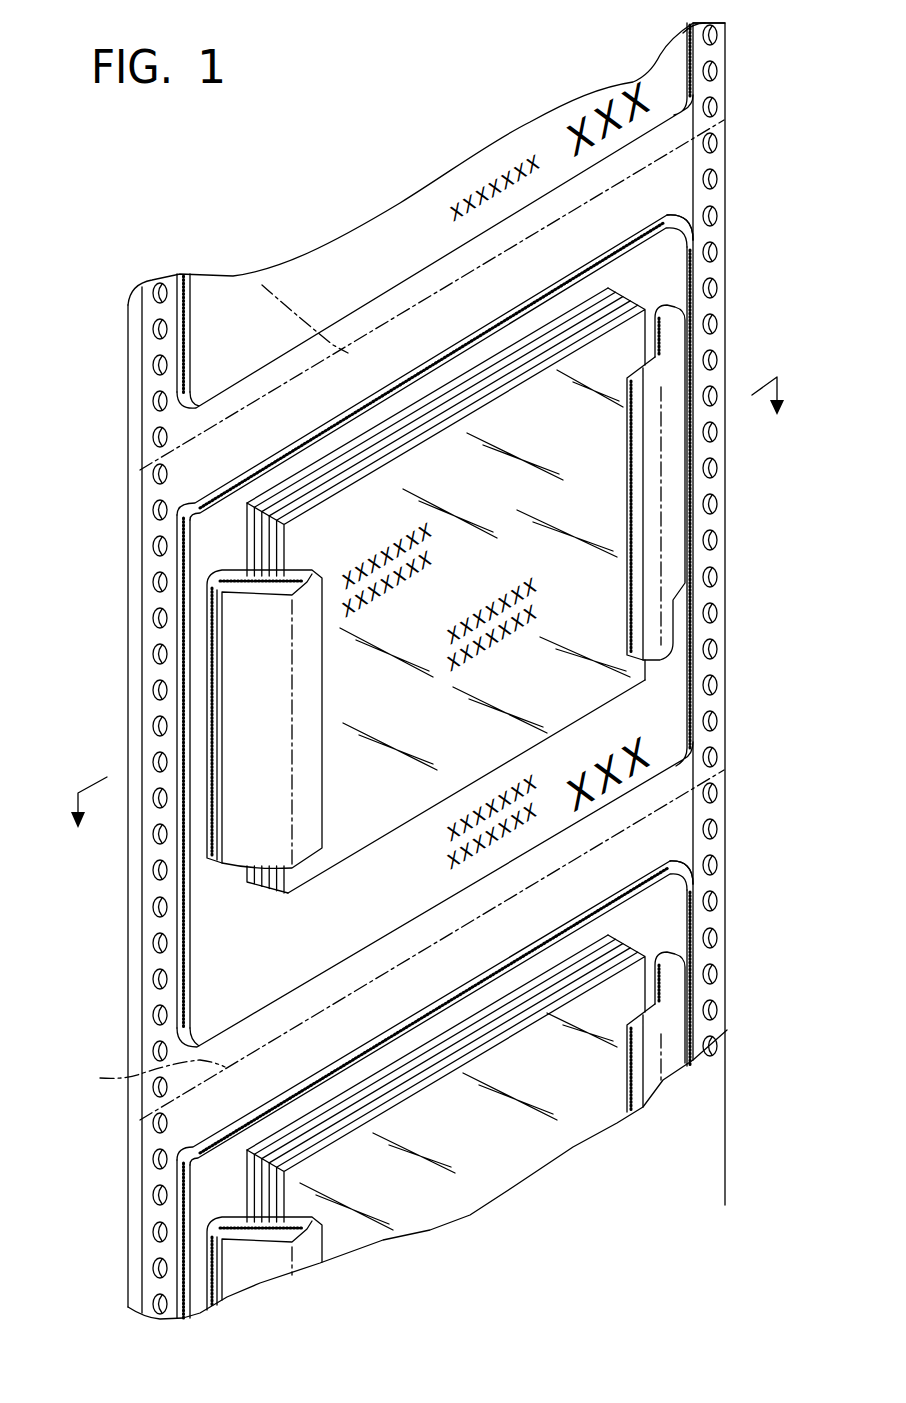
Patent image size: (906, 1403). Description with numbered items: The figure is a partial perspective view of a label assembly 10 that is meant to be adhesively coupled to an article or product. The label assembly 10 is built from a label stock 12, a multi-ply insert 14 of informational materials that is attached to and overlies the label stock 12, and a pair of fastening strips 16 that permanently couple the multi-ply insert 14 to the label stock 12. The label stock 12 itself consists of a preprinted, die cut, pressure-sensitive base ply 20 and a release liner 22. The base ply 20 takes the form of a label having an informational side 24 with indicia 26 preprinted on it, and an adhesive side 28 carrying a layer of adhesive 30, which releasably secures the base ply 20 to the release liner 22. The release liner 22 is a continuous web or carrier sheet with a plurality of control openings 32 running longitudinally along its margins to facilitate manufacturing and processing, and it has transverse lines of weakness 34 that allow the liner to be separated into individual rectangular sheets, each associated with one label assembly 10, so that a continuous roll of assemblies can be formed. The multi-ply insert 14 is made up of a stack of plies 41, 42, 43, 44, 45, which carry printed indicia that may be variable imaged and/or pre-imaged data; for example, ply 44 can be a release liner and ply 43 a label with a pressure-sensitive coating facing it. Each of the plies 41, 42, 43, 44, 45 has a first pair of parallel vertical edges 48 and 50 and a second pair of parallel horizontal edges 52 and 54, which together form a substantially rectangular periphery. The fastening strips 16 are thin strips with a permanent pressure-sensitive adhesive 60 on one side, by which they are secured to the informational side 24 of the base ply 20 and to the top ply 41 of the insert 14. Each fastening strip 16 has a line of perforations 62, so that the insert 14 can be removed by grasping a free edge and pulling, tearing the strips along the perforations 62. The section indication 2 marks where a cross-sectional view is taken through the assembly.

The section line 2- 2 is at (428, 621).
The label assembly 10 is at (98, 386).
The label stock 12 is at (705, 89).
The multi-ply insert 14 is at (241, 500).
The fastening strips 16 is at (320, 860).
The base ply 20 is at (695, 57).
The release liner 22 is at (728, 45).
The informational side 24 is at (240, 360).
The indicia 26 is at (632, 118).
The adhesive side 28 is at (136, 296).
The adhesive 30 is at (142, 348).
The control openings 32 is at (696, 588).
The transverse lines of weakness 34 is at (262, 283).
The ply 41 is at (386, 428).
The ply 42 is at (400, 420).
The ply 43 is at (417, 412).
The ply 44 is at (440, 400).
The ply 45 is at (490, 372).
The vertical edge 48 is at (247, 544).
The vertical edge 50 is at (668, 322).
The horizontal edge 52 is at (537, 322).
The horizontal edge 54 is at (352, 852).
The pressure-sensitive adhesive 60 is at (314, 567).
The perforations 62 is at (292, 692).